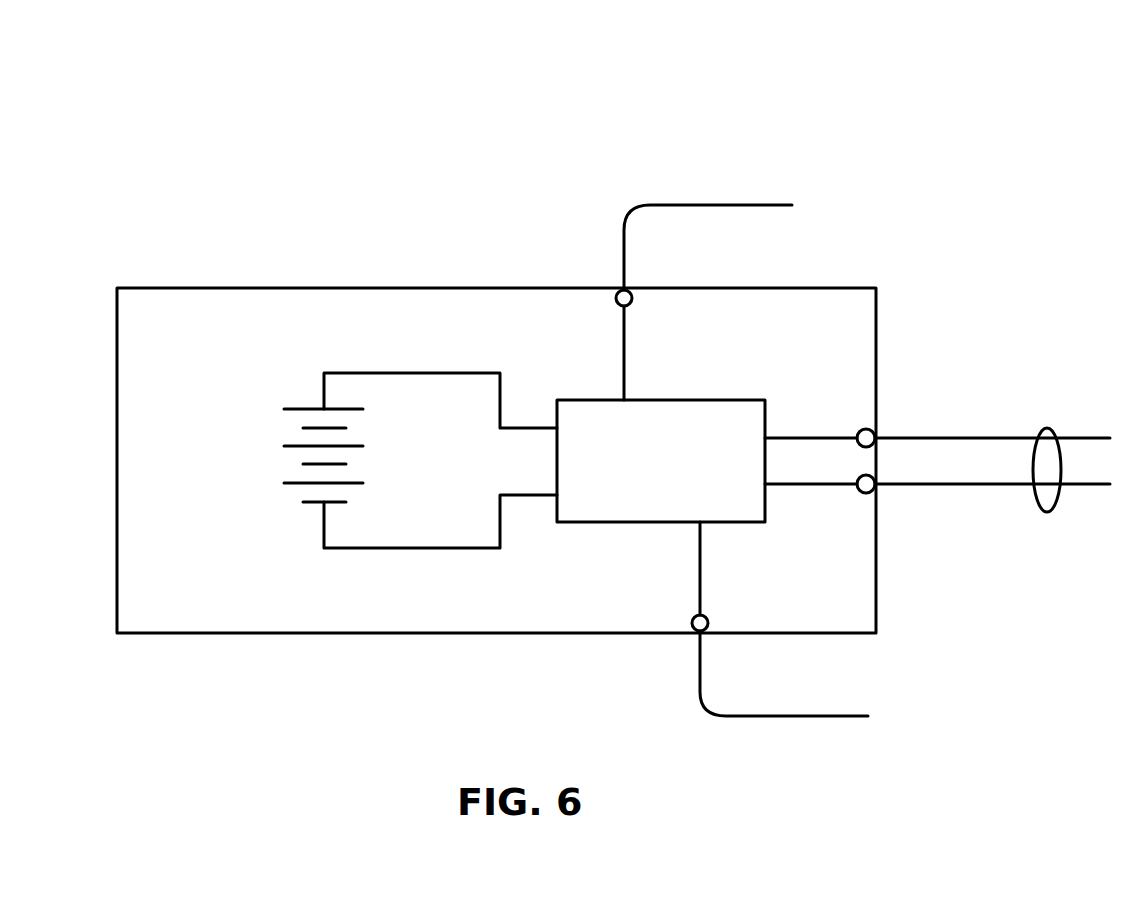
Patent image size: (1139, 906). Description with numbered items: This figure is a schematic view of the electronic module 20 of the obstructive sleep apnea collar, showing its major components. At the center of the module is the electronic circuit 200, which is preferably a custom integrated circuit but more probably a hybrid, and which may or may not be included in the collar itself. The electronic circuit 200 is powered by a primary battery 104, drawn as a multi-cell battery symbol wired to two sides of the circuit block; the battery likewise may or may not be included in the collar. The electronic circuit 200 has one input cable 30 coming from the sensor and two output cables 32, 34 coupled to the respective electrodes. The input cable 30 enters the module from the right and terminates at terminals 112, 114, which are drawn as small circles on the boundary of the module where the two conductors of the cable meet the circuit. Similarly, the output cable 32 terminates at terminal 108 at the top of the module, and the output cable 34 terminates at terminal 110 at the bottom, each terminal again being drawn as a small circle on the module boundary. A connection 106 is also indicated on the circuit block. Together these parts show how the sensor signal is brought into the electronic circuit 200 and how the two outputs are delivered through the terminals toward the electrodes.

The electronic module 20 is at (935, 143).
The input cable 30 is at (1042, 428).
The output cable 32 is at (708, 220).
The output cable 34 is at (784, 705).
The primary battery 104 is at (360, 385).
The controller circuit 106 is at (599, 543).
The terminal 108 is at (613, 295).
The terminal 110 is at (708, 627).
The terminal 112 is at (861, 410).
The terminal 114 is at (865, 512).
The electronic circuit 200 is at (661, 461).